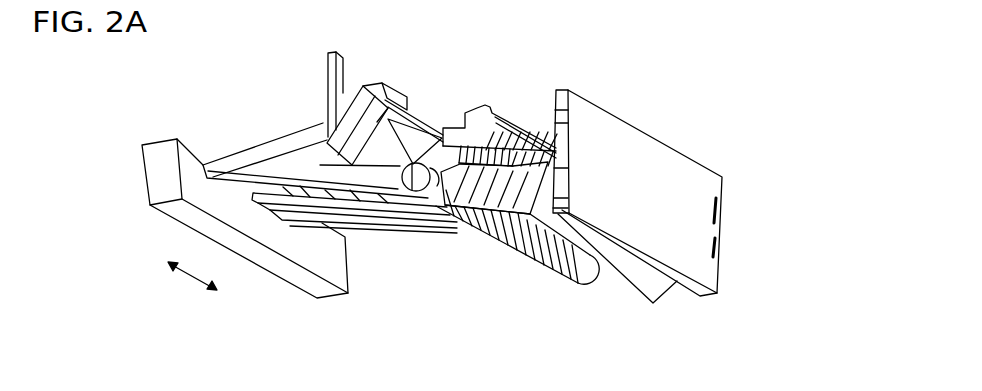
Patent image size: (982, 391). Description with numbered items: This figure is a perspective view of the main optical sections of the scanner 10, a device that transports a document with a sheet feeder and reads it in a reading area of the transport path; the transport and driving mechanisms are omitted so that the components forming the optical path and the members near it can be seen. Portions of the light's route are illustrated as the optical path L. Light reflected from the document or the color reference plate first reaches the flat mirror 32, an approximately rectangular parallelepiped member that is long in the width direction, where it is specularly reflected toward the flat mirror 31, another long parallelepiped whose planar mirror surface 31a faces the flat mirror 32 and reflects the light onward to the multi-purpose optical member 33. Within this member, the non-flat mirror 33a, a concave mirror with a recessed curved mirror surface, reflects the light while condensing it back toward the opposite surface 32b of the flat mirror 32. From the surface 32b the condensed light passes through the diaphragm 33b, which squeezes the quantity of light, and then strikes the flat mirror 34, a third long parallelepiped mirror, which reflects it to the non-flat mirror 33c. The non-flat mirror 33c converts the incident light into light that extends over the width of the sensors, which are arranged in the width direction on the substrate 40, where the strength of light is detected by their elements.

The scanner 10 is at (182, 57).
The flat mirror 31 is at (219, 204).
The surface 31a is at (323, 169).
The optical path L is at (289, 90).
The flat mirror 32 is at (381, 99).
The opposite surface 32b is at (432, 116).
The multi-purpose optical member 33 is at (498, 118).
The non-flat mirror 33a is at (517, 240).
The diaphragm 33b is at (431, 212).
The non-flat mirror 33c is at (543, 113).
The flat mirror 34 is at (647, 278).
The substrate 40 is at (668, 191).